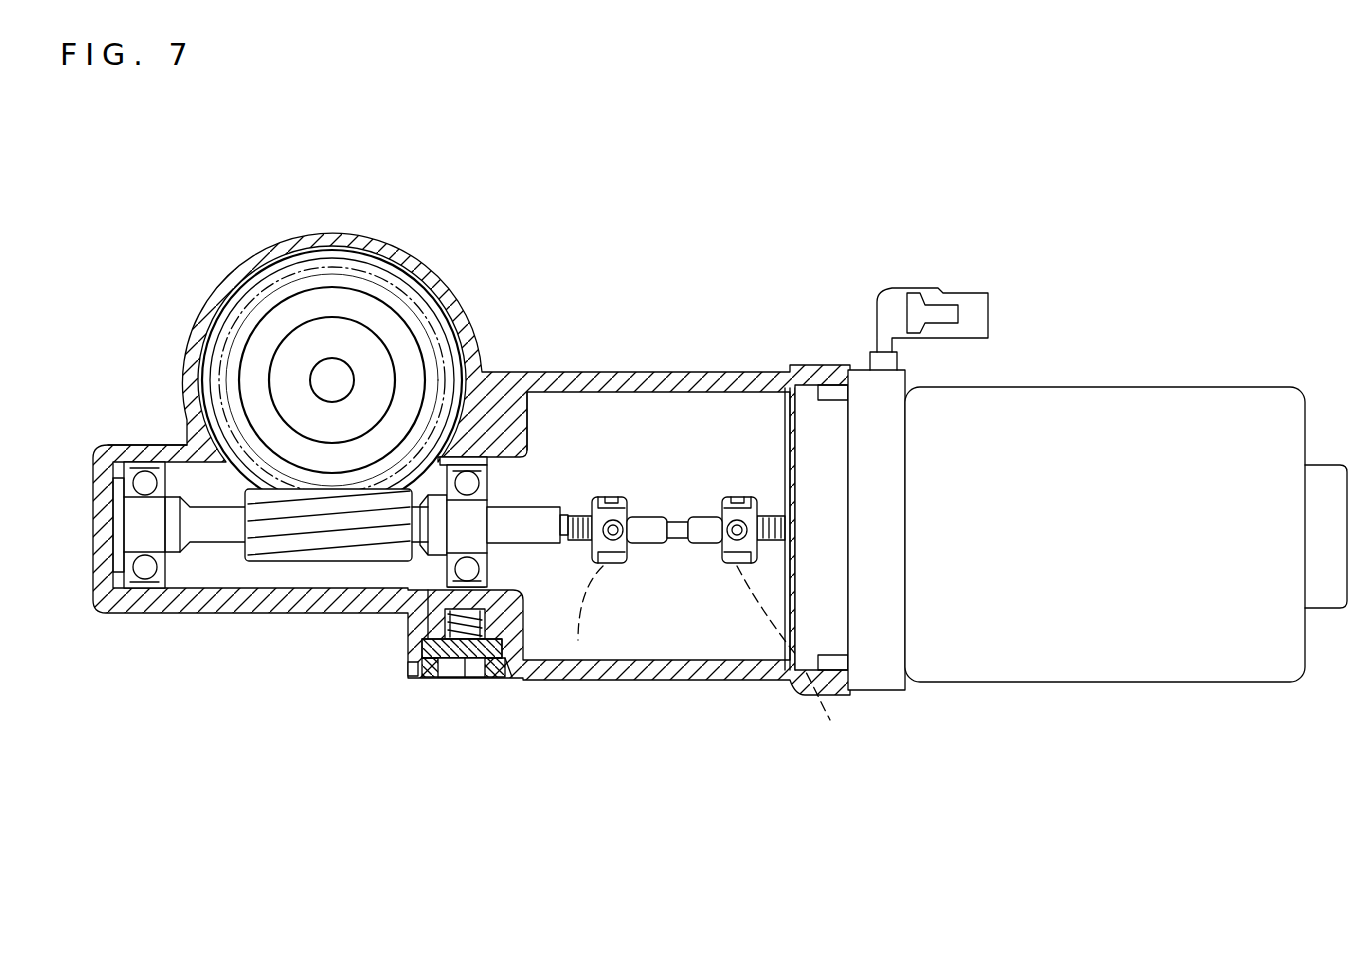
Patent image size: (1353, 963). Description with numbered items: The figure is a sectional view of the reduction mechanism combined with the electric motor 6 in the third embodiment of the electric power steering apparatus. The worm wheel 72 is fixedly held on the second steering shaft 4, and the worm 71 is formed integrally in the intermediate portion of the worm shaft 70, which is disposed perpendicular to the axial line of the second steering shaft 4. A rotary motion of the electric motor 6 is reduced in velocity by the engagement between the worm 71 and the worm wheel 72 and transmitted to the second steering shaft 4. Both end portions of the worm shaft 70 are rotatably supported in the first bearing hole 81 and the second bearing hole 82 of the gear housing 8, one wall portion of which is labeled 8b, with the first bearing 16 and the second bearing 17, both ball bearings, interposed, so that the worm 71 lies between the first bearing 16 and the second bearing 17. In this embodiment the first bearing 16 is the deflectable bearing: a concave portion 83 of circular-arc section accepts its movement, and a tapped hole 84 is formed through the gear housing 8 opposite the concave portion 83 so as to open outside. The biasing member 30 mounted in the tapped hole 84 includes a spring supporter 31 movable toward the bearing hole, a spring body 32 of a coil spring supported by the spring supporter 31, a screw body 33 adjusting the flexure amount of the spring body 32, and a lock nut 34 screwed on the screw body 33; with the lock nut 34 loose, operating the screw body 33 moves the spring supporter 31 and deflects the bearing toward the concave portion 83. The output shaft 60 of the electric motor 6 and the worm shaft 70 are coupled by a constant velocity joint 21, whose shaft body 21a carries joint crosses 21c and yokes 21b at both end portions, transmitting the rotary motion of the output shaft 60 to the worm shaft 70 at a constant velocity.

The second steering shaft 4 is at (334, 372).
The gear housing 8 is at (416, 250).
The housing wall portion 8b is at (118, 450).
The first bearing 16 is at (527, 440).
The second bearing 17 is at (128, 615).
The electric motor 6 is at (1090, 378).
The output shaft 60 is at (766, 508).
The worm shaft 70 is at (560, 507).
The worm 71 is at (275, 568).
The worm wheel 72 is at (218, 338).
The first bearing hole 81 is at (412, 598).
The second bearing hole 82 is at (172, 462).
The concave portion 83 is at (470, 465).
The tapped hole 84 is at (472, 645).
The constant velocity joint 21 is at (728, 611).
The shaft body 21a is at (688, 560).
The yoke 21b is at (628, 565).
The joint cross 21c is at (730, 638).
The biasing member 30 is at (520, 652).
The spring supporter 31 is at (408, 636).
The spring body 32 is at (428, 662).
The screw body 33 is at (436, 682).
The lock nut 34 is at (506, 682).